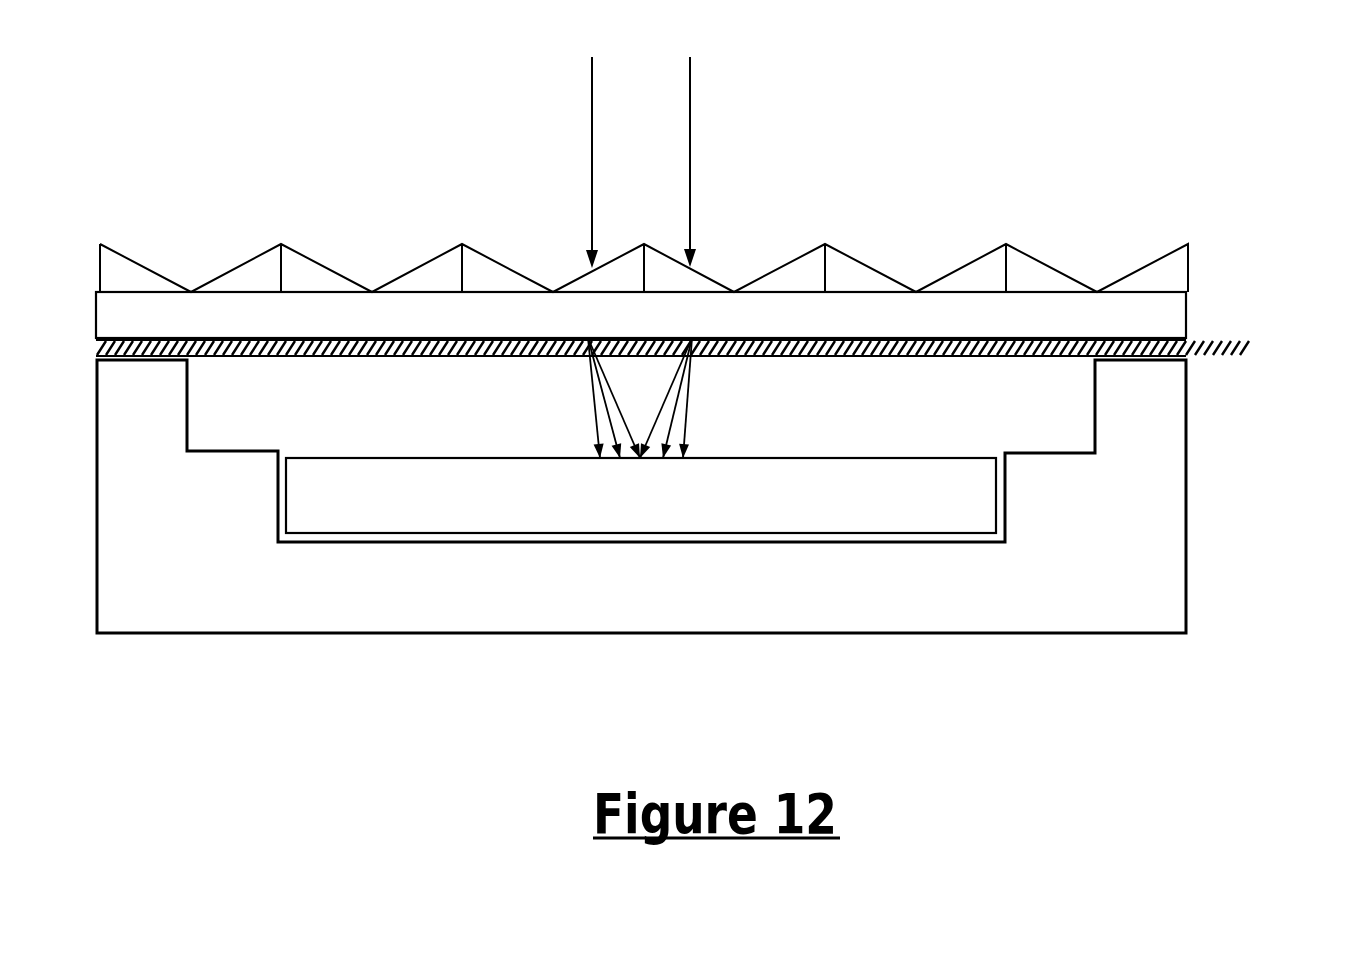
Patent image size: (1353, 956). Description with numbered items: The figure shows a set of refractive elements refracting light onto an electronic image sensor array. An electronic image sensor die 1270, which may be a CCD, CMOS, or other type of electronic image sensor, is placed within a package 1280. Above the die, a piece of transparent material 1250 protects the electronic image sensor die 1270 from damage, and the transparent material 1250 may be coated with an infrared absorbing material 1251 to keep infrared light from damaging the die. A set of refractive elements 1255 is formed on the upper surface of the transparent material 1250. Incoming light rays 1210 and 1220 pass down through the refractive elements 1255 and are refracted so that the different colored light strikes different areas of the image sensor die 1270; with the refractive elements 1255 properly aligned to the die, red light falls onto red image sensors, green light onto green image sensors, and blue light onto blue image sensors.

The light ray 1210 is at (580, 257).
The light ray 1220 is at (701, 257).
The transparent material 1250 is at (641, 315).
The infrared absorbing material 1251 is at (1205, 353).
The refractive elements 1255 is at (424, 252).
The electronic image sensor die 1270 is at (641, 495).
The package 1280 is at (641, 496).